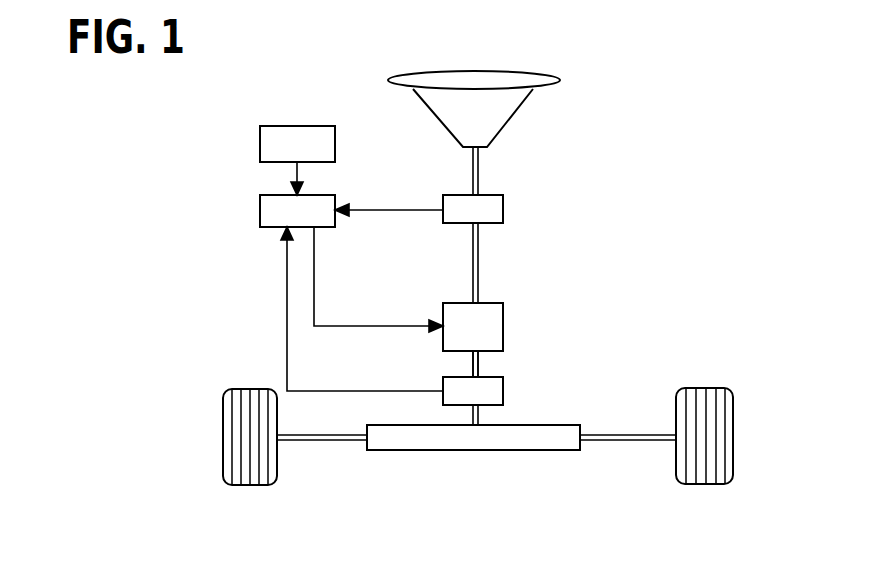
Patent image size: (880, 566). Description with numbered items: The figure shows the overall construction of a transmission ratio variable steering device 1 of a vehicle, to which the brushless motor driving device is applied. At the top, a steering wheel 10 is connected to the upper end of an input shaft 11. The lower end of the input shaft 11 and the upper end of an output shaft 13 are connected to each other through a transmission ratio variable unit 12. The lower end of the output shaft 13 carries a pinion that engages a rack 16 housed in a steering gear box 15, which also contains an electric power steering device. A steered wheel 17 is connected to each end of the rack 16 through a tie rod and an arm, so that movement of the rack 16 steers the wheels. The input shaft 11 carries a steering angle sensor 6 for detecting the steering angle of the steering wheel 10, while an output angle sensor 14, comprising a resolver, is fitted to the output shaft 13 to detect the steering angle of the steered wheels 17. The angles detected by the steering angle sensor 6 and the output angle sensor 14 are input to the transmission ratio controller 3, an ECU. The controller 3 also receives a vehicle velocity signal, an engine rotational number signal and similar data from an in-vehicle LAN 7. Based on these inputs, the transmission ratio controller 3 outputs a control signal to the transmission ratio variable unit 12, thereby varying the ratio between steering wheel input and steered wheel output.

The transmission ratio variable steering device 1 is at (477, 46).
The transmission ratio controller 3 is at (260, 211).
The steering angle sensor 6 is at (503, 208).
The in-vehicle LAN 7 is at (260, 145).
The steering wheel 10 is at (521, 76).
The input shaft 11 is at (478, 265).
The transmission ratio variable unit 12 is at (503, 325).
The output shaft 13 is at (478, 362).
The output angle sensor 14 is at (503, 390).
The steering gear box 15 is at (427, 452).
The rack 16 is at (325, 443).
The steered wheel 17 is at (240, 389).